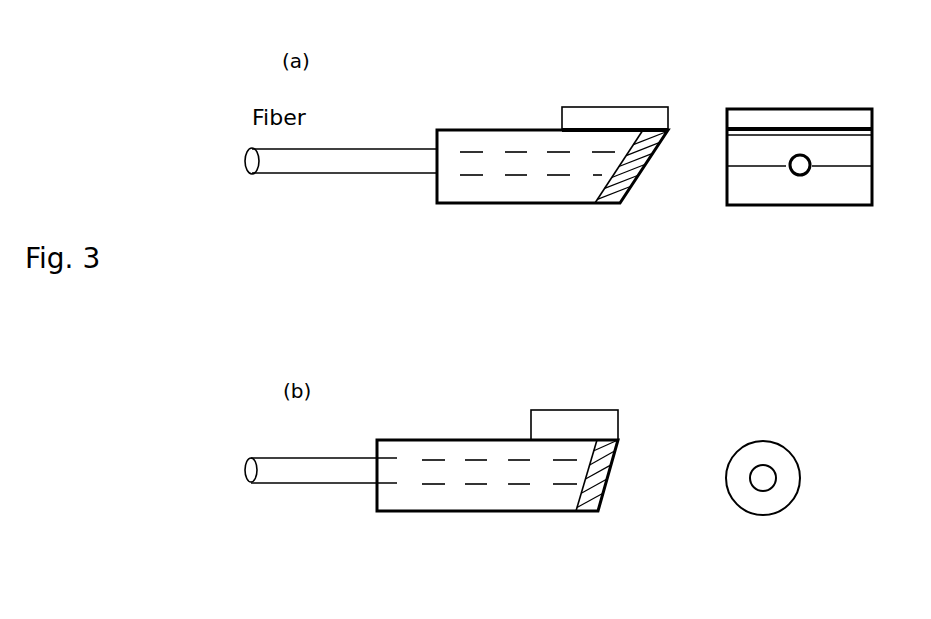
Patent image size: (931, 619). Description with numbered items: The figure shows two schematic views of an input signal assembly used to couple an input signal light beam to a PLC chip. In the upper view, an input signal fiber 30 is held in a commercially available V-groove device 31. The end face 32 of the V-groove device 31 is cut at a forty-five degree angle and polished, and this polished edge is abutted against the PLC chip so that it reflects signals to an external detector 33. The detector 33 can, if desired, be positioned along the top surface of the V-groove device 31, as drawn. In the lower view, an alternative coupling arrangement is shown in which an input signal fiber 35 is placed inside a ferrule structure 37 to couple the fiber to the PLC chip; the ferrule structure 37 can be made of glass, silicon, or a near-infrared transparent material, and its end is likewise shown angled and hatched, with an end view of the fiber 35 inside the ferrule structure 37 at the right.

The input signal fiber 30 is at (330, 173).
The V-groove device 31 is at (592, 162).
The end face 32 is at (665, 181).
The detector 33 is at (687, 123).
The input signal fiber 35 is at (323, 483).
The ferrule structure 37 is at (497, 511).